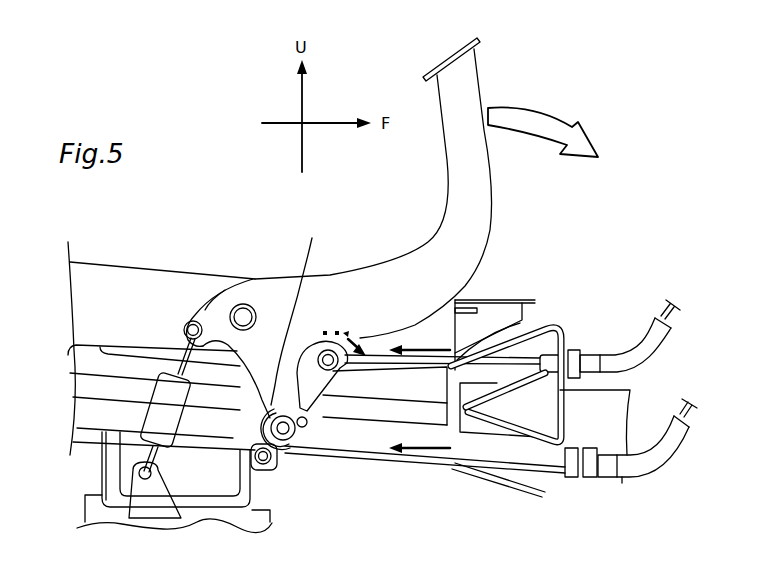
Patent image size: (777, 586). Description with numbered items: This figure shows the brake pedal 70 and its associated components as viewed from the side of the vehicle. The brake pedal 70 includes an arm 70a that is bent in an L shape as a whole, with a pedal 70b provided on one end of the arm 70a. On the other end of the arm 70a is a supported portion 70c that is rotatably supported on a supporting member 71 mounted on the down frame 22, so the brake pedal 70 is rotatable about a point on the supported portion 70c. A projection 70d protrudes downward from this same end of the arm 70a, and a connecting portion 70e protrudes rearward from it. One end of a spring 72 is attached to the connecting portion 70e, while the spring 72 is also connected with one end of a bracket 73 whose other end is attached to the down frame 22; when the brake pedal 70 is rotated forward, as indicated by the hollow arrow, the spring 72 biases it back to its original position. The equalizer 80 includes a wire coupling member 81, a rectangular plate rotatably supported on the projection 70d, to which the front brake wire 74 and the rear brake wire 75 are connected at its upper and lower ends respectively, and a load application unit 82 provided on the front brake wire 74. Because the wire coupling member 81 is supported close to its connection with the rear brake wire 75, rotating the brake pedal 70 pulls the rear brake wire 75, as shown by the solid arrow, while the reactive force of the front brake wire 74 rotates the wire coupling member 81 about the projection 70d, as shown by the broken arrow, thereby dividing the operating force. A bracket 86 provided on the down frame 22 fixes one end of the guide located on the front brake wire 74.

The brake pedal 70 is at (561, 77).
The arm 70a is at (478, 187).
The pedal 70b is at (478, 42).
The supported portion 70c is at (252, 287).
The projection 70d is at (312, 238).
The connecting portion 70e is at (203, 290).
The supporting member 71 is at (158, 283).
The spring 72 is at (157, 412).
The bracket 73 is at (257, 483).
The front brake wire 74 is at (382, 370).
The rear brake wire 75 is at (388, 458).
The equalizer 80 is at (432, 485).
The wire coupling member 81 is at (328, 390).
The load application unit 82 is at (615, 354).
The bracket 86 is at (560, 325).
The down frame 22 is at (617, 420).